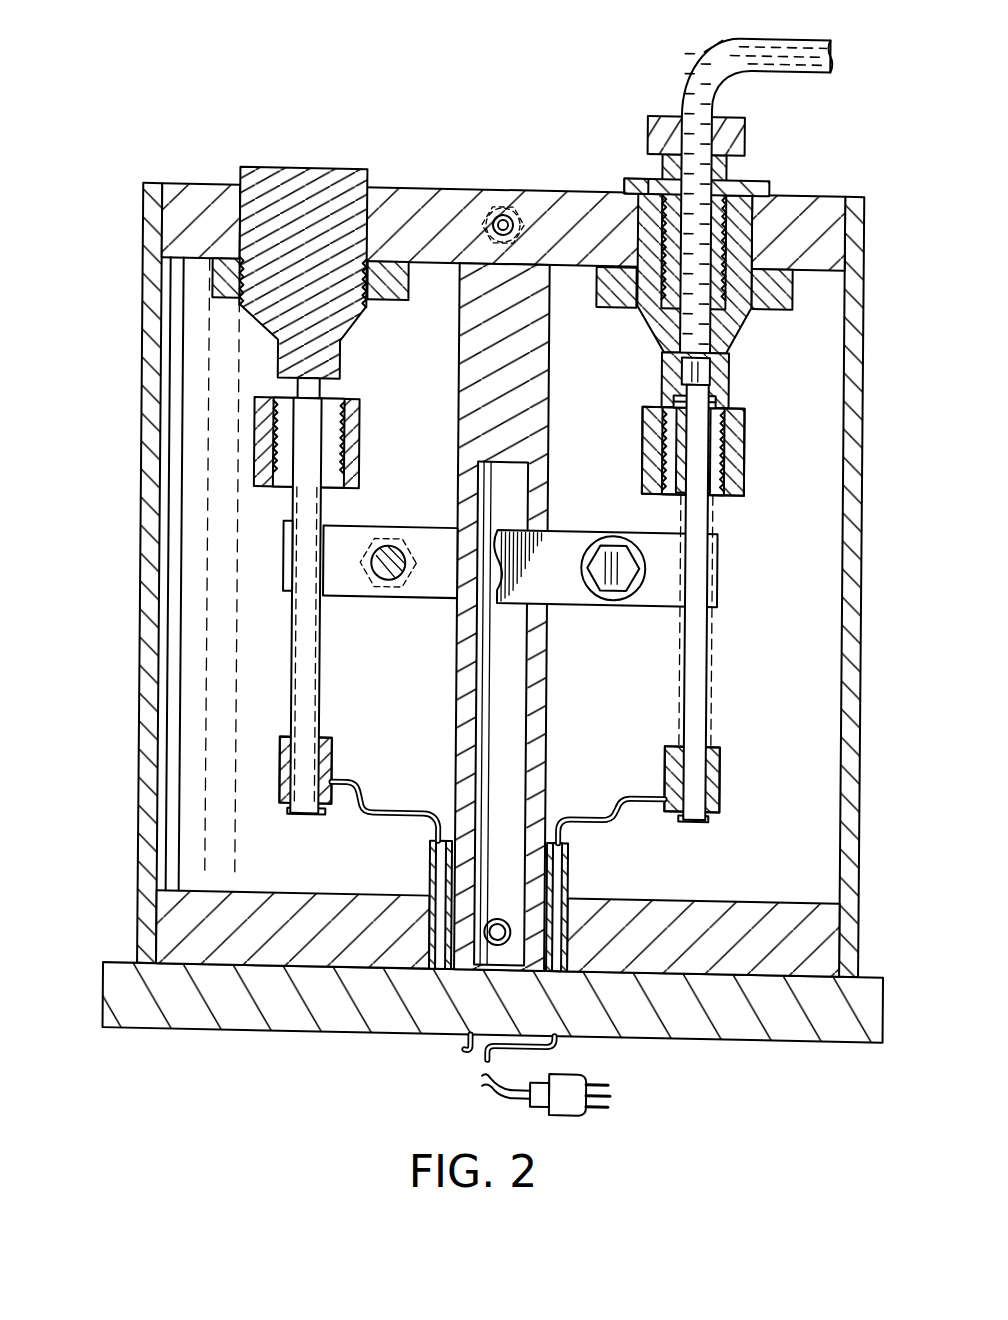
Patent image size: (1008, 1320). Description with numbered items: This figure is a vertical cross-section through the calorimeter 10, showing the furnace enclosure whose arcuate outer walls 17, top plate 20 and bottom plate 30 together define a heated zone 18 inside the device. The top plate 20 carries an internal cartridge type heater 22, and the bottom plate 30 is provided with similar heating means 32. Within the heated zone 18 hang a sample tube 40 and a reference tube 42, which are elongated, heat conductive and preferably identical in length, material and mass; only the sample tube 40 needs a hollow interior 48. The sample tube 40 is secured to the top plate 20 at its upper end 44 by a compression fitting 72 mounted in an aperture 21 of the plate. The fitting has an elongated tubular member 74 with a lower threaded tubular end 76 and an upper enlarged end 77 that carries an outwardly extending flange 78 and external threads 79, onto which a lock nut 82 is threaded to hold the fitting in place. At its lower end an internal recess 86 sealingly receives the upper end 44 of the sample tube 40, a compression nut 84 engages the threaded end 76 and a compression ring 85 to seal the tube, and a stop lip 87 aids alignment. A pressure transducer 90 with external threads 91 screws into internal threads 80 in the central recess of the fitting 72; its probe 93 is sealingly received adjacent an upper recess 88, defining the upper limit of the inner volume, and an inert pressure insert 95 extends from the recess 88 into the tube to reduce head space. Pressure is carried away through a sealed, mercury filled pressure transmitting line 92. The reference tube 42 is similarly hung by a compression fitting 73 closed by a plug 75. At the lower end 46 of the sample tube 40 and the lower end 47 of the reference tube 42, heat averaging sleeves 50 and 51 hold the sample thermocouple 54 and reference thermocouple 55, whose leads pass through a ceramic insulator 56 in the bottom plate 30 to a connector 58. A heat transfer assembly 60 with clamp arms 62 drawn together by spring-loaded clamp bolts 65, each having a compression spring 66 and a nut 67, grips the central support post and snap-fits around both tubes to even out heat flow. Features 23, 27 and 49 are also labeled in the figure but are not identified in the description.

The calorimeter 10 is at (478, 599).
The arcuate outer walls 17 is at (148, 332).
The heated zone 18 is at (176, 490).
The top plate 20 is at (440, 210).
The aperture 21 is at (644, 178).
The cartridge type heater 22 is at (488, 212).
The top plate left portion 23 is at (268, 205).
The base plate 27 is at (331, 1024).
The bottom plate 30 is at (302, 896).
The heating means 32 is at (504, 946).
The sample tube 40 is at (718, 632).
The reference tube 42 is at (290, 640).
The upper end 44 is at (716, 604).
The lower end 46 is at (712, 746).
The lower end 47 is at (280, 745).
The hollow interior 48 is at (715, 798).
The rod end 49 is at (690, 745).
The heat averaging sleeve 50 is at (722, 757).
The heat averaging sleeve 51 is at (283, 781).
The sample thermocouple 54 is at (603, 820).
The reference thermocouple 55 is at (407, 818).
The ceramic insulator 56 is at (572, 877).
The connector 58 is at (570, 1080).
The heat transfer assembly 60 is at (556, 620).
The clamp arm 62 is at (343, 600).
The clamp bolt 65 is at (625, 535).
The compression spring 66 is at (614, 600).
The nut 67 is at (388, 530).
The compression fitting 72 is at (679, 440).
The compression fitting 73 is at (366, 408).
The elongated tubular member 74 is at (729, 370).
The plug 75 is at (297, 190).
The lower threaded tubular end 76 is at (745, 423).
The upper enlarged end 77 is at (758, 236).
The upper outwardly extending flange 78 is at (752, 175).
The external threads 79 is at (743, 316).
The internal threads 80 is at (650, 237).
The lock nut 82 is at (790, 297).
The compression nut 84 is at (745, 465).
The compression ring 85 is at (718, 492).
The internal recess 86 is at (662, 457).
The stop lip 87 is at (663, 398).
The upper recess 88 is at (679, 370).
The pressure transducer 90 is at (746, 118).
The external threads 91 is at (768, 183).
The pressure transmitting line 92 is at (694, 72).
The probe 93 is at (646, 318).
The inert pressure insert 95 is at (715, 396).